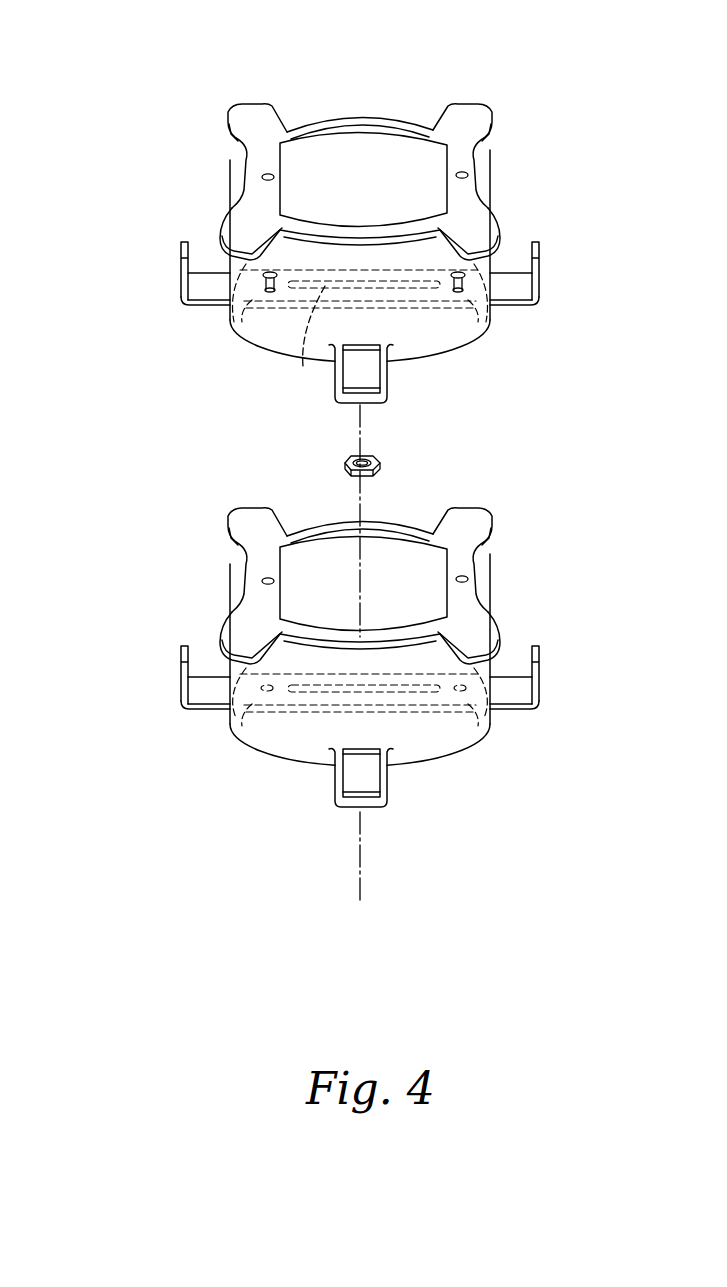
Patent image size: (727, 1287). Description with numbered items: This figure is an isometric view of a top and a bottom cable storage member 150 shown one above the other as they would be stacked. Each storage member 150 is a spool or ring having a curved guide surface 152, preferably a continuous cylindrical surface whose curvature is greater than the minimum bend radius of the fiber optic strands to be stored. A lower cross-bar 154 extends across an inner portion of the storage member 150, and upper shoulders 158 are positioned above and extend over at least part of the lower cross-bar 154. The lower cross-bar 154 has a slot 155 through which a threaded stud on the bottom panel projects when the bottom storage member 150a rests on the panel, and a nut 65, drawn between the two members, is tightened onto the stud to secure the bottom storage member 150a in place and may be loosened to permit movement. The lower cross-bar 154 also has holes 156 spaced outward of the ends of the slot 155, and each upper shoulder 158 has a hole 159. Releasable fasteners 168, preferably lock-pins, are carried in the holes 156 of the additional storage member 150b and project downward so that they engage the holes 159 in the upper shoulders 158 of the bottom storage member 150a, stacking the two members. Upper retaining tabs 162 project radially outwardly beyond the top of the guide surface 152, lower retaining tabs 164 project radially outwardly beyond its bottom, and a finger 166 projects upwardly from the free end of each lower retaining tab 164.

The storage member 150 is at (343, 434).
The bottom storage member 150a is at (445, 606).
The additional storage member 150b is at (300, 148).
The guide surface 152 is at (265, 337).
The lower cross-bar 154 is at (440, 310).
The slot 155 is at (293, 339).
The holes 156 is at (227, 712).
The upper shoulders 158 is at (243, 188).
The hole 159 is at (262, 178).
The upper retaining tabs 162 is at (250, 117).
The lower retaining tabs 164 is at (200, 292).
The finger 166 is at (181, 259).
The releasable fasteners 168 is at (235, 321).
The nut 65 is at (381, 463).